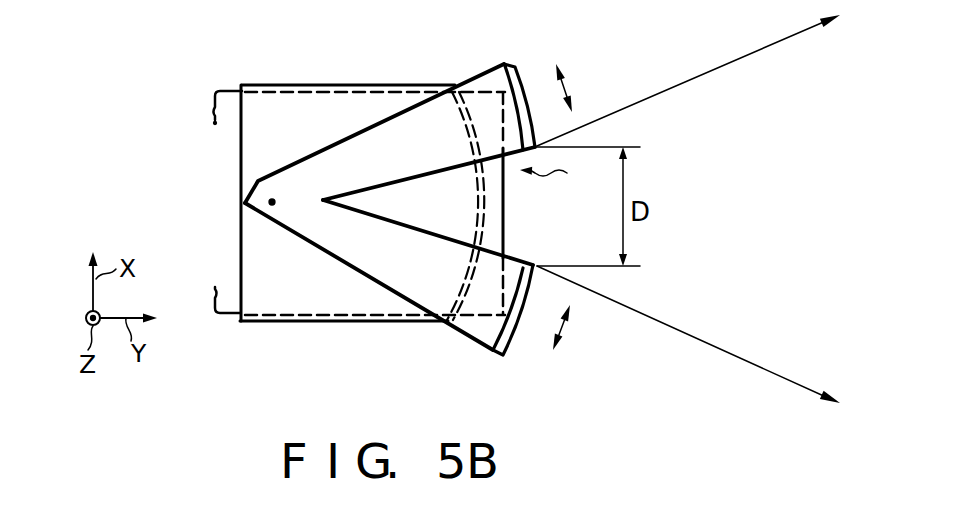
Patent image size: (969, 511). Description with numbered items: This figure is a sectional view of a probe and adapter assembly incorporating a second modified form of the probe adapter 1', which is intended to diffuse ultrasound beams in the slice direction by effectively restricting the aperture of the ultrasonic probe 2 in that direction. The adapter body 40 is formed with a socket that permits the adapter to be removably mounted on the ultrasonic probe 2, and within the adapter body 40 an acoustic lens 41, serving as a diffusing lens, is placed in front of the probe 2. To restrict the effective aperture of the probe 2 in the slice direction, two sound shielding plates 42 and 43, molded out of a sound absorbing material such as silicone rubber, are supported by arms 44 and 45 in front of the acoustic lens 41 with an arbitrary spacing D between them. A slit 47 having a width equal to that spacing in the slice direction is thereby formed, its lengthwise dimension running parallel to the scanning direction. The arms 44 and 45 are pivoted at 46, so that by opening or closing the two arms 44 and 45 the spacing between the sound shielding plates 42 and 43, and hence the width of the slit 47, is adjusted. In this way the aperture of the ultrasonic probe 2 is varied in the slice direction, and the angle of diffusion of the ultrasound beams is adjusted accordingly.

The probe adapter 1' is at (348, 235).
The ultrasonic probe 2 is at (223, 318).
The adapter body 40 is at (360, 324).
The acoustic lens 41 is at (497, 223).
The sound shielding plate 42 is at (517, 67).
The sound shielding plate 43 is at (513, 343).
The arm 44 is at (427, 105).
The arm 45 is at (412, 303).
The pivot 46 is at (272, 202).
The slit 47 is at (563, 173).